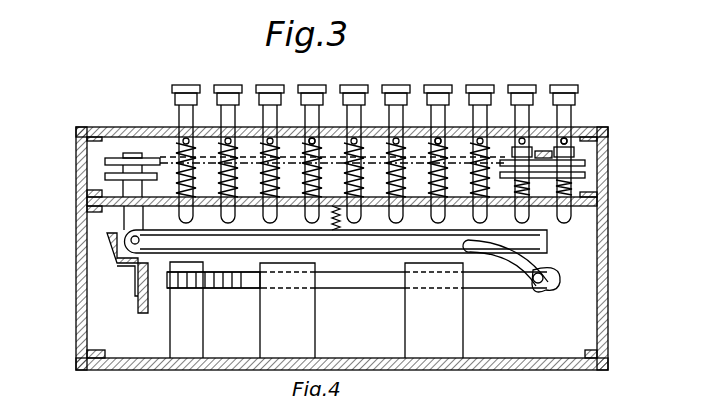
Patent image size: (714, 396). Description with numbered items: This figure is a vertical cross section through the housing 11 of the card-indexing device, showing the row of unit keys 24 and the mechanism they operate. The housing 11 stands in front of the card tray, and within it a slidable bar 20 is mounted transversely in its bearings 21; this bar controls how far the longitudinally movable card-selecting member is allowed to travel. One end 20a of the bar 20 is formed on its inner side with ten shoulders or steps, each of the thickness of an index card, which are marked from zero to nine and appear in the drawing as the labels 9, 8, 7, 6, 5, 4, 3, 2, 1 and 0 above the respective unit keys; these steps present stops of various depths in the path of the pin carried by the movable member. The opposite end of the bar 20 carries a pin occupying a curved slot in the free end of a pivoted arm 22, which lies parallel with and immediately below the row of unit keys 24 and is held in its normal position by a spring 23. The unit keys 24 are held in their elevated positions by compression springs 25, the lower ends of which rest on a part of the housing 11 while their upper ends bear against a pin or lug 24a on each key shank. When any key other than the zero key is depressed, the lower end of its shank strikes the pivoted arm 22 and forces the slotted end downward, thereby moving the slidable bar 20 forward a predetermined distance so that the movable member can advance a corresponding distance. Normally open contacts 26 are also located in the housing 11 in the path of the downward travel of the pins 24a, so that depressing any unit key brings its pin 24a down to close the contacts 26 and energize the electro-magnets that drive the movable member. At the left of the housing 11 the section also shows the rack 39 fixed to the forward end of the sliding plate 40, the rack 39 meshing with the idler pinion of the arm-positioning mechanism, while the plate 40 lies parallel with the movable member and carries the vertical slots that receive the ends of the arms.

The housing 11 is at (94, 127).
The unit keys 24 is at (230, 85).
The pin or lug 24a is at (304, 131).
The compression springs 25 is at (176, 152).
The contacts 26 is at (578, 153).
The spring 23 is at (344, 223).
The pivoted arm 22 is at (534, 243).
The rack 39 is at (107, 246).
The sliding plate 40 is at (140, 302).
The slidable bar 20 is at (364, 287).
The end of bar 20a is at (226, 290).
The bearings 21 is at (412, 337).
The shoulder nine 9 is at (186, 147).
The shoulder eight 8 is at (228, 147).
The shoulder seven 7 is at (270, 147).
The shoulder six 6 is at (312, 147).
The shoulder five 5 is at (354, 147).
The shoulder four 4 is at (396, 147).
The shoulder three 3 is at (438, 147).
The shoulder two 2 is at (480, 147).
The shoulder one 1 is at (522, 147).
The shoulder zero 0 is at (564, 147).